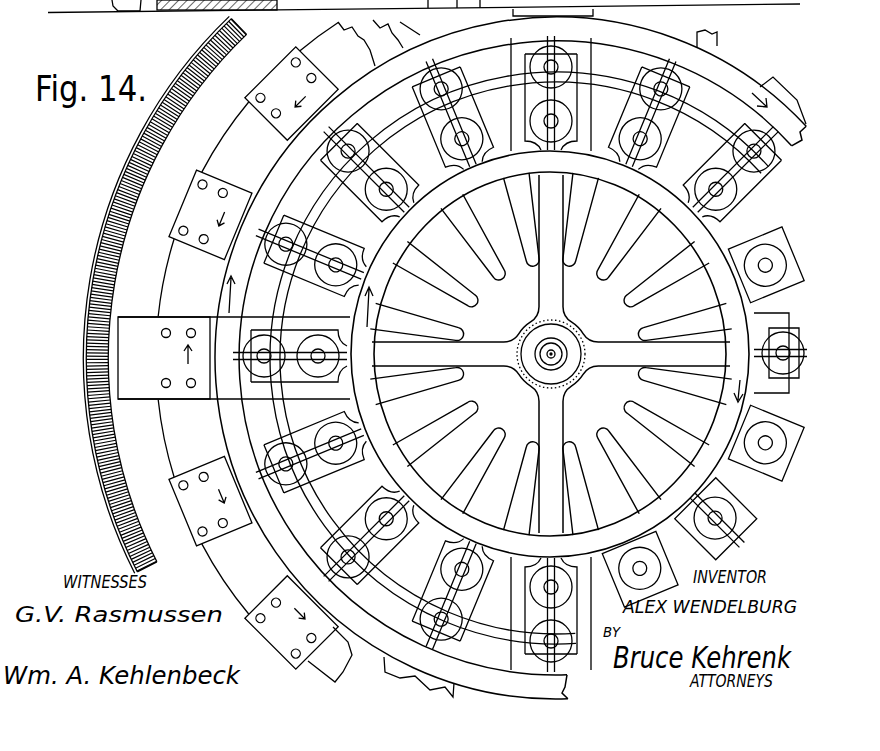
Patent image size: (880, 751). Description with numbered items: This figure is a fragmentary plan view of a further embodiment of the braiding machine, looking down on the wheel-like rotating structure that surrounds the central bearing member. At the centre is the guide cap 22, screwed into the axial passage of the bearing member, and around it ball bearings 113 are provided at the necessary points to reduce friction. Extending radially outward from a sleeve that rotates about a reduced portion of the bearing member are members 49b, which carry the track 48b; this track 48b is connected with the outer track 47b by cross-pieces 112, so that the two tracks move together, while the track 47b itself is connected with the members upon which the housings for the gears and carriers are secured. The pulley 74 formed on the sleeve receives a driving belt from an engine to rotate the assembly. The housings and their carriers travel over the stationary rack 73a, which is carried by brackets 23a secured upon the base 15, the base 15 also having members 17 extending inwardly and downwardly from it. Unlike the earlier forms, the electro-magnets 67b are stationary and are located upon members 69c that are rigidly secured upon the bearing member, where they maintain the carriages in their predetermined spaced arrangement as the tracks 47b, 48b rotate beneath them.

The stationary rack 73a is at (106, 232).
The base 15 is at (172, 268).
The bracket 23a is at (138, 401).
The track 47b is at (222, 428).
The member 17 is at (517, 105).
The cross-piece 112 is at (742, 190).
The electro-magnet 67b is at (447, 147).
The track 48b is at (710, 255).
The member 49b is at (622, 352).
The member 69c is at (440, 272).
The pulley 74 is at (608, 447).
The ball bearings 113 is at (547, 322).
The guide cap 22 is at (556, 359).